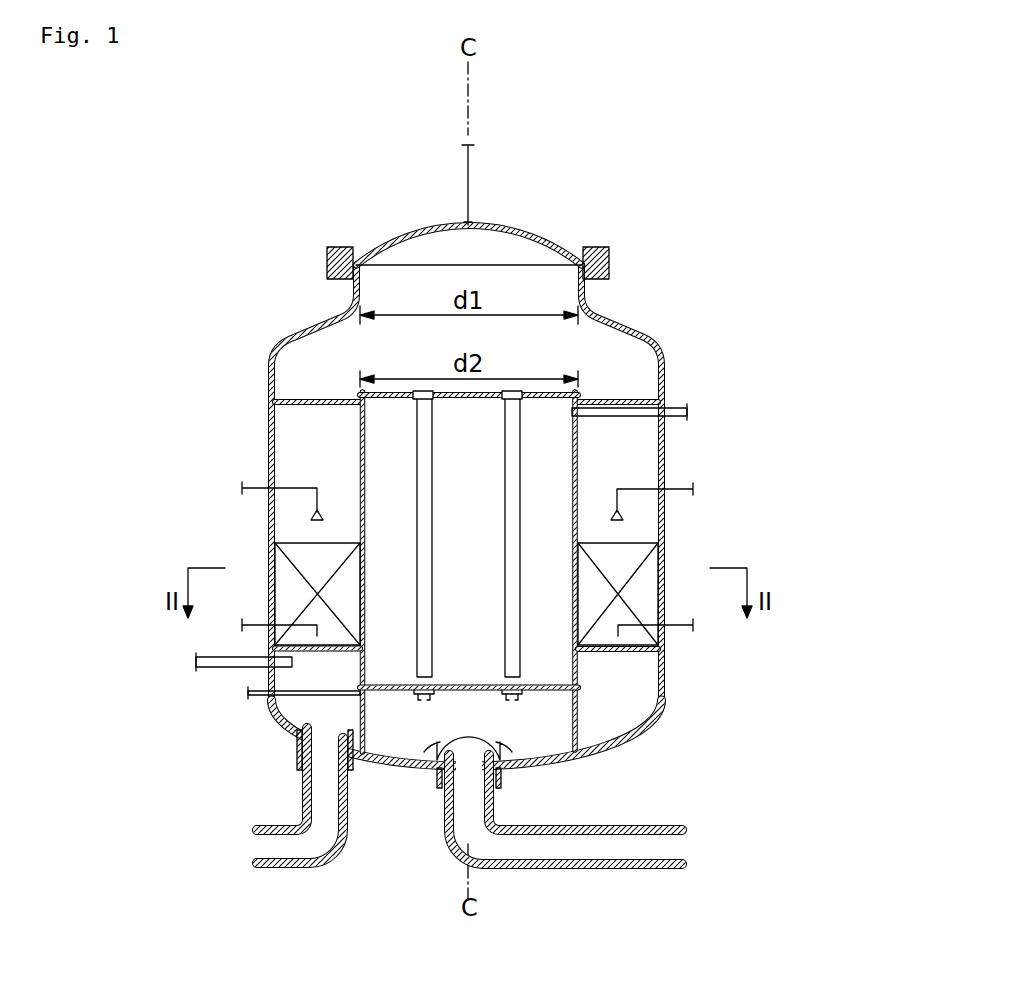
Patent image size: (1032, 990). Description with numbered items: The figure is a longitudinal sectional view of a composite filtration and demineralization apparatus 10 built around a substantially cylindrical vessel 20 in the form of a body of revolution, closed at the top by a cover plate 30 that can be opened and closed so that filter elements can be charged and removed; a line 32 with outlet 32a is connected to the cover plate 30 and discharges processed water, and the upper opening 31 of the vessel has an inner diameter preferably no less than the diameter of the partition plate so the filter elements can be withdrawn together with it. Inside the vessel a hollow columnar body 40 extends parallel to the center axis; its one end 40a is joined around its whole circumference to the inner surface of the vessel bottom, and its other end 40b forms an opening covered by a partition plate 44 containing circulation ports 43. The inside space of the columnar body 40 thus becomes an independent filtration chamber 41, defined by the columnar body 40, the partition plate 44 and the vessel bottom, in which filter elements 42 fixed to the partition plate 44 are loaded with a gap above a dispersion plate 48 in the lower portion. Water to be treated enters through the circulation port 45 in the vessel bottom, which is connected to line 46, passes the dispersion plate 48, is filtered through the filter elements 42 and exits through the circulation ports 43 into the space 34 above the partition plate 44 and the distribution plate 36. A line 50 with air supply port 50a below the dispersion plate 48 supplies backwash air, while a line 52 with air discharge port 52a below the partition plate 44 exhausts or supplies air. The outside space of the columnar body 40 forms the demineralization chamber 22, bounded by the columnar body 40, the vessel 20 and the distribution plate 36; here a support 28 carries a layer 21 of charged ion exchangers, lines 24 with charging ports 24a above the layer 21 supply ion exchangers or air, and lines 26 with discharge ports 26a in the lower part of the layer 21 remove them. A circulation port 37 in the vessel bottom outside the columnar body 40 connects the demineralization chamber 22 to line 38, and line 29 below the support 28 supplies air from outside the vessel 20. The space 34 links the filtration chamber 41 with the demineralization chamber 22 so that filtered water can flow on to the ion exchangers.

The composite filtration and demineralization apparatus 10 is at (654, 172).
The vessel 20 is at (268, 388).
The layer of charged ion exchangers 21 is at (315, 562).
The demineralization chamber 22 is at (256, 477).
The lines for supplying ion exchangers 24 is at (242, 490).
The ion exchangers charging port 24a is at (617, 522).
The lines for removing ion exchangers 26 is at (258, 625).
The ion exchangers discharge port 26a is at (625, 652).
The support 28 is at (297, 652).
The line for supplying air 29 is at (217, 668).
The cover plate 30 is at (527, 228).
The upper opening 31 is at (455, 265).
The line 32 is at (470, 158).
The outlet 32a is at (467, 230).
The space 34 is at (473, 345).
The distribution plate 36 is at (318, 399).
The circulation port 37 is at (324, 740).
The line 38 is at (283, 825).
The hollow columnar body 40 is at (360, 440).
The one end of columnar body 40a is at (572, 745).
The other end of columnar body 40b is at (583, 391).
The filtration chamber 41 is at (484, 596).
The filter elements 42 is at (432, 436).
The circulation ports 43 is at (422, 391).
The partition plate 44 is at (383, 405).
The circulation port 45 is at (468, 762).
The line 46 is at (599, 825).
The dispersion plate 48 is at (479, 691).
The line for supplying air 50 is at (256, 698).
The air supply port 50a is at (368, 696).
The line 52 is at (687, 412).
The air discharge port 52a is at (572, 413).